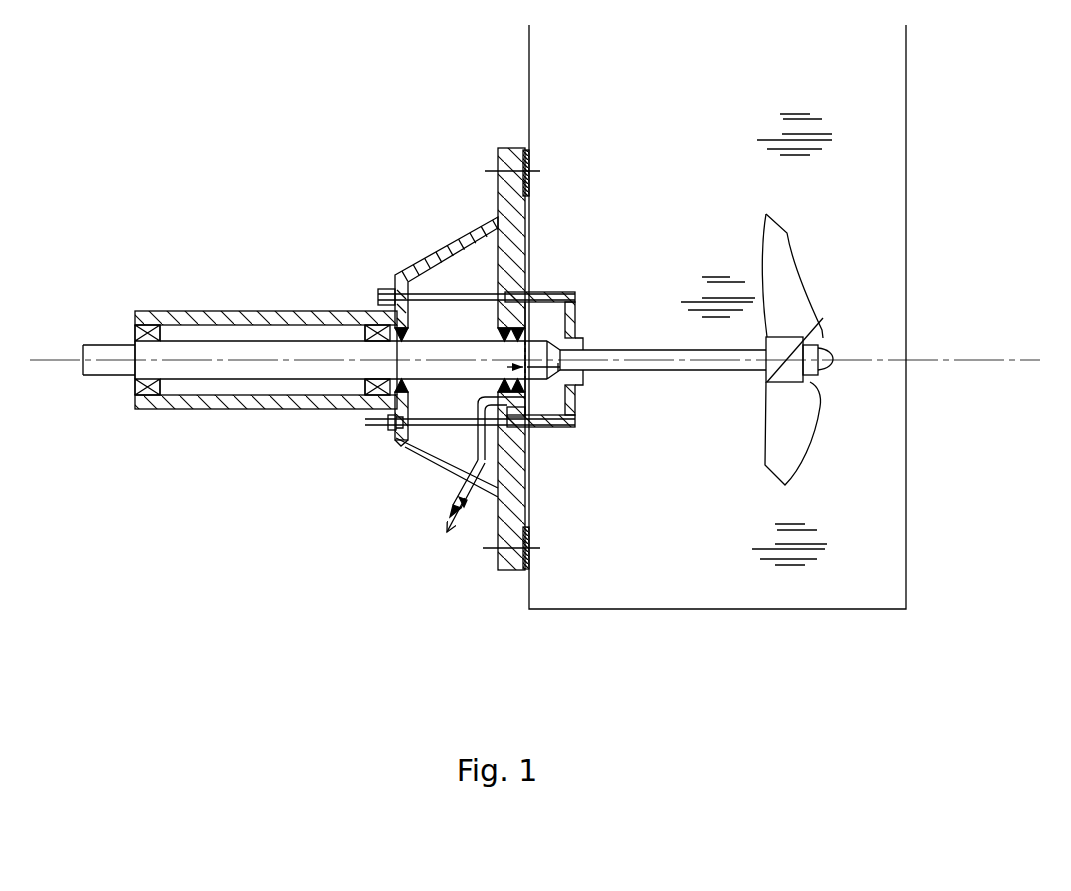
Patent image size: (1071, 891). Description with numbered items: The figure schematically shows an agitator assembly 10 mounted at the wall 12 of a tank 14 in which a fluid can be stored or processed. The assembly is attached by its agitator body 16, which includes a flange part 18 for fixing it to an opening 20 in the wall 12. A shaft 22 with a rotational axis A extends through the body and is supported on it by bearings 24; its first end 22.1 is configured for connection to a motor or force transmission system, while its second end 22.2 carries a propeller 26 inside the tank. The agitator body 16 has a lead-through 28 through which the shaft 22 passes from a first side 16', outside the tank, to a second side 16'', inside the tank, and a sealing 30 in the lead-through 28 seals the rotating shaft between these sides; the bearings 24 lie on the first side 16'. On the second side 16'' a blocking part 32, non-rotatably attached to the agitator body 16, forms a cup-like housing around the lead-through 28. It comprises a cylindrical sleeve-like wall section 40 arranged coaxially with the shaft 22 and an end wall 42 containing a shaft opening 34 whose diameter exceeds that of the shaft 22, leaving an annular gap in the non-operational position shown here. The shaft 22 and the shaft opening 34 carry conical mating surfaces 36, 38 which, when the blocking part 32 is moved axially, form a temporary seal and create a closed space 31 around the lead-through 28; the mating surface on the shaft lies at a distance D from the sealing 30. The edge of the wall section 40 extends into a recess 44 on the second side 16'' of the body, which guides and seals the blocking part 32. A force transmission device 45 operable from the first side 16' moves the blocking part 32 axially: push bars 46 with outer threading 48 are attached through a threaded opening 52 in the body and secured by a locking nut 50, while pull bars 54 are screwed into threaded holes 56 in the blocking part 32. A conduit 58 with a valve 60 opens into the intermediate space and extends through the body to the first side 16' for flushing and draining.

The agitator assembly 10 is at (441, 172).
The wall 12 is at (531, 130).
The tank 14 is at (722, 265).
The agitator body 16 is at (557, 289).
The first side 16' is at (412, 183).
The second side 16'' is at (628, 181).
The flange part 18 is at (507, 182).
The opening 20 is at (534, 512).
The shaft 22 is at (207, 347).
The first end 22.1 is at (92, 350).
The second end 22.2 is at (757, 384).
The bearings 24 is at (150, 327).
The propeller 26 is at (798, 310).
The lead-through 28 is at (580, 312).
The sealing 30 is at (488, 337).
The closed space 31 is at (560, 331).
The blocking part 32 is at (527, 428).
The shaft opening 34 is at (588, 345).
The mating surface 36 is at (577, 349).
The mating surface 38 is at (582, 396).
The wall section 40 is at (550, 292).
The end wall 42 is at (585, 380).
The recess 44 is at (528, 455).
The force transmission device 45 is at (346, 297).
The push bars 46 is at (476, 458).
The outer threading 48 is at (412, 442).
The locking nut 50 is at (390, 427).
The threaded opening 52 is at (400, 432).
The pull bars 54 is at (418, 292).
The threaded holes 56 is at (529, 291).
The conduit 58 is at (464, 470).
The valve 60 is at (470, 510).
The rotational axis A is at (842, 360).
The distance D is at (496, 369).